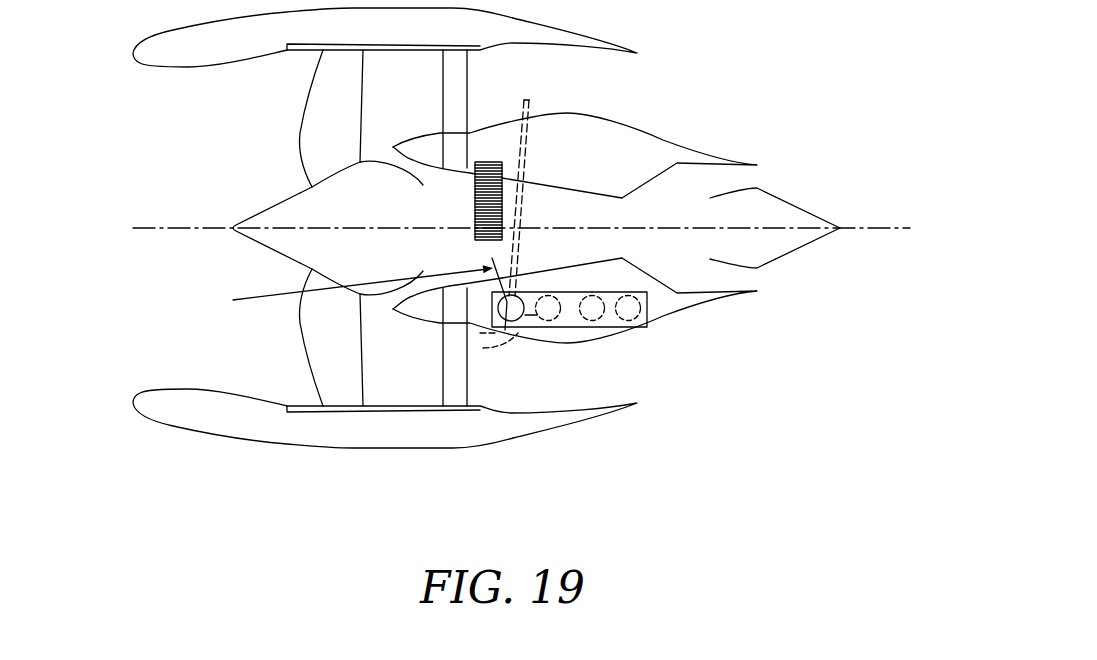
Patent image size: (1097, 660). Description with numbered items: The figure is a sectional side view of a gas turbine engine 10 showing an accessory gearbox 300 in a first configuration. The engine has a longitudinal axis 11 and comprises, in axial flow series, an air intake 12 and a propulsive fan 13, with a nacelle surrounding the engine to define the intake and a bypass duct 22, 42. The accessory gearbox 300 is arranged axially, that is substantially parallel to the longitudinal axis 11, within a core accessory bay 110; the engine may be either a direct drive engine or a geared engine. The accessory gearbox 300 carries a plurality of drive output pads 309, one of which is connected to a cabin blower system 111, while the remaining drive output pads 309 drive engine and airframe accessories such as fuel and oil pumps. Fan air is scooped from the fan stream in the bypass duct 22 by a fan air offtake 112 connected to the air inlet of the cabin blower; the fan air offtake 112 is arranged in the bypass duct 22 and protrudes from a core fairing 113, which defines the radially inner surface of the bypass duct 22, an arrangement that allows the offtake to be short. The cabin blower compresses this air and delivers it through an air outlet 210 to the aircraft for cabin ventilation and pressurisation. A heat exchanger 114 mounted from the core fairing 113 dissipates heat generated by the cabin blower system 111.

The gas turbine engine 10 is at (783, 68).
The longitudinal axis 11 is at (913, 227).
The air intake 12 is at (152, 128).
The propulsive fan 13 is at (320, 97).
The bypass duct 22 is at (550, 80).
The bypass duct 42 is at (575, 300).
The heat exchanger 114 is at (468, 181).
The air outlet 210 is at (540, 103).
The cabin blower system 111 is at (532, 292).
The accessory gearbox 300 is at (639, 361).
The drive output pads 309 is at (554, 324).
The core accessory bay 110 is at (532, 342).
The fan air offtake 112 is at (493, 360).
The core fairing 113 is at (544, 362).